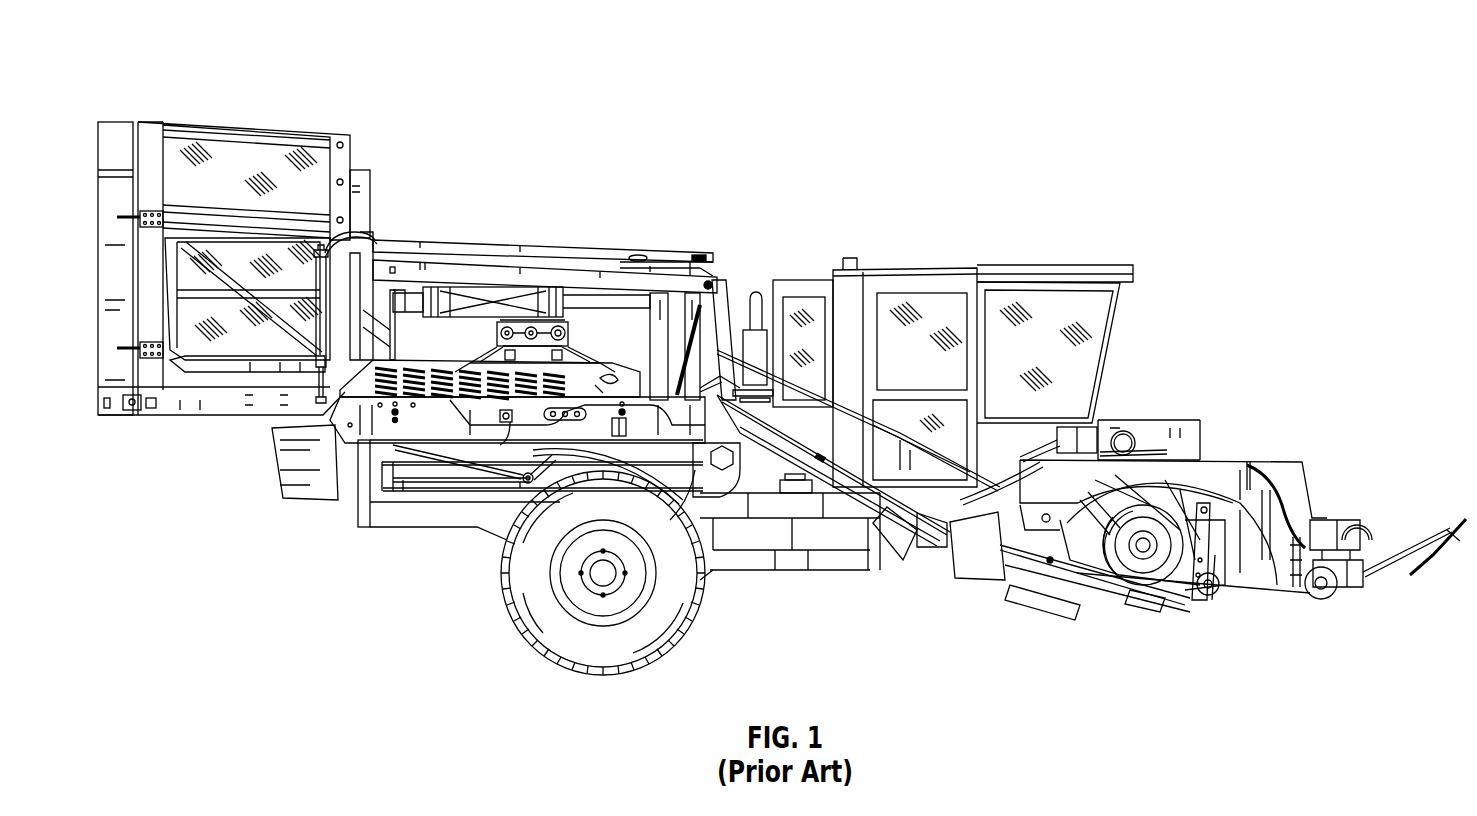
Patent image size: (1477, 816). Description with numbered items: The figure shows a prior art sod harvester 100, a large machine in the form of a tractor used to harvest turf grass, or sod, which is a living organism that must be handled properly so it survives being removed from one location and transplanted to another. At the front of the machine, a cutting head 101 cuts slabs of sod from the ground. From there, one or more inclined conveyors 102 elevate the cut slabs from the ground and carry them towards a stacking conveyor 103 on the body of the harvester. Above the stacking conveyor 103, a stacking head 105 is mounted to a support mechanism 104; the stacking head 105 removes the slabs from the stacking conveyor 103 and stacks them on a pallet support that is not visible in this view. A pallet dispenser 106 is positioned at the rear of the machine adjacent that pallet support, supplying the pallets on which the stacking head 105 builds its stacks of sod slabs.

The sod harvester 100 is at (1155, 80).
The cutting head 101 is at (1207, 596).
The inclined conveyor 102 is at (908, 557).
The stacking conveyor 103 is at (488, 413).
The support mechanism 104 is at (590, 352).
The stacking head 105 is at (566, 307).
The pallet dispenser 106 is at (357, 152).